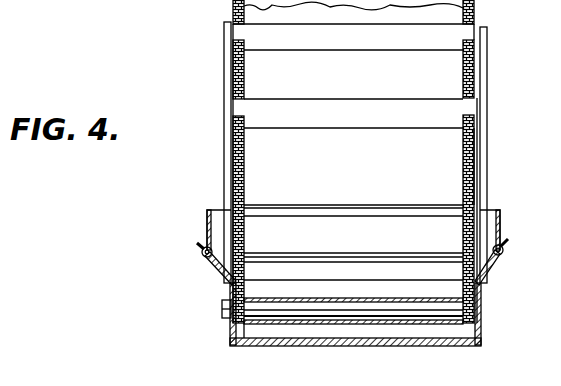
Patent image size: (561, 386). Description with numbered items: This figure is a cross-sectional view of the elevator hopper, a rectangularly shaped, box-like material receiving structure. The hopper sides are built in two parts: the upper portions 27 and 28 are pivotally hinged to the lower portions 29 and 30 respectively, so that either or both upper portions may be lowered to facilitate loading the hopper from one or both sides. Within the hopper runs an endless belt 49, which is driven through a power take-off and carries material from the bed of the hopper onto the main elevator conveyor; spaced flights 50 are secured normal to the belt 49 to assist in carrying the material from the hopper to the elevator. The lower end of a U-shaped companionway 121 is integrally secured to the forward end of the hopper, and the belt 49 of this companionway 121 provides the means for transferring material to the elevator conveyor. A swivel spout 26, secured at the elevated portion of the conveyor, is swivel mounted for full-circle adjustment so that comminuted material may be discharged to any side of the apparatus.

The U-shaped companionway 121 is at (209, 98).
The spaced flights 50 is at (458, 106).
The endless belt 49 is at (447, 192).
The upper portion of hopper side 27 is at (207, 227).
The upper portion of hopper side 28 is at (500, 229).
The swivel spout 26 is at (222, 305).
The lower portion of hopper side 29 is at (232, 328).
The lower portion of hopper side 30 is at (506, 336).